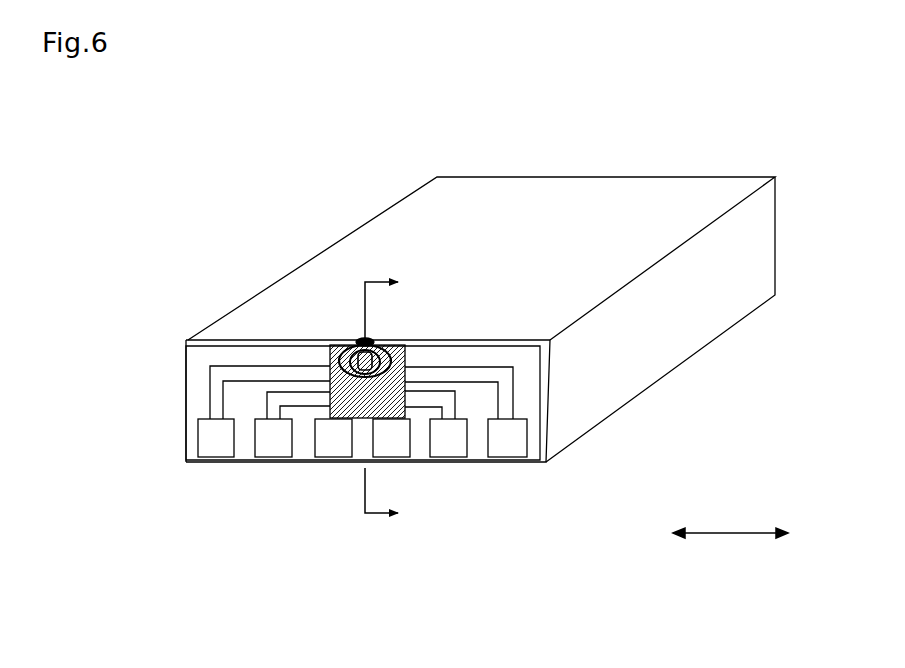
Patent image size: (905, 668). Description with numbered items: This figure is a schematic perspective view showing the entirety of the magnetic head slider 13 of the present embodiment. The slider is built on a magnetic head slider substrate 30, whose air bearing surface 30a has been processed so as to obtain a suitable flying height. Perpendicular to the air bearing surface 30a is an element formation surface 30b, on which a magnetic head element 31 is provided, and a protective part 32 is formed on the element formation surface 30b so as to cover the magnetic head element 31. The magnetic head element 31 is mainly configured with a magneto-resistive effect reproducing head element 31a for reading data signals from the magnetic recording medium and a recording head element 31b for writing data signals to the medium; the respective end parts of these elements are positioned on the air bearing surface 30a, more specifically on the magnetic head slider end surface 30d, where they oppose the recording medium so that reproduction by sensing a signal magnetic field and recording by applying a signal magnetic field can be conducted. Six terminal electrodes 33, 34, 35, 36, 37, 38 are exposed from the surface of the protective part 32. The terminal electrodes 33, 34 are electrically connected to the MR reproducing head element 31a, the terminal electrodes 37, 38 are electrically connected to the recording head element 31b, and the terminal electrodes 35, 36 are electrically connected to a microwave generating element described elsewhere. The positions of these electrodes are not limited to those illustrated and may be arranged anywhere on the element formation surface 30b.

The magnetic head slider 13 is at (545, 146).
The magnetic head slider substrate 30 is at (760, 242).
The air bearing surface 30a is at (390, 222).
The element formation surface 30b is at (204, 330).
The magnetic head slider end surface 30d is at (295, 338).
The magnetic head element 31 is at (513, 258).
The MR reproducing head element 31a is at (372, 343).
The recording head element 31b is at (386, 341).
The protective part 32 is at (551, 421).
The terminal electrode 33 is at (265, 460).
The terminal electrode 34 is at (452, 460).
The terminal electrode 35 is at (318, 460).
The terminal electrode 36 is at (392, 460).
The terminal electrode 37 is at (210, 460).
The terminal electrode 38 is at (503, 460).